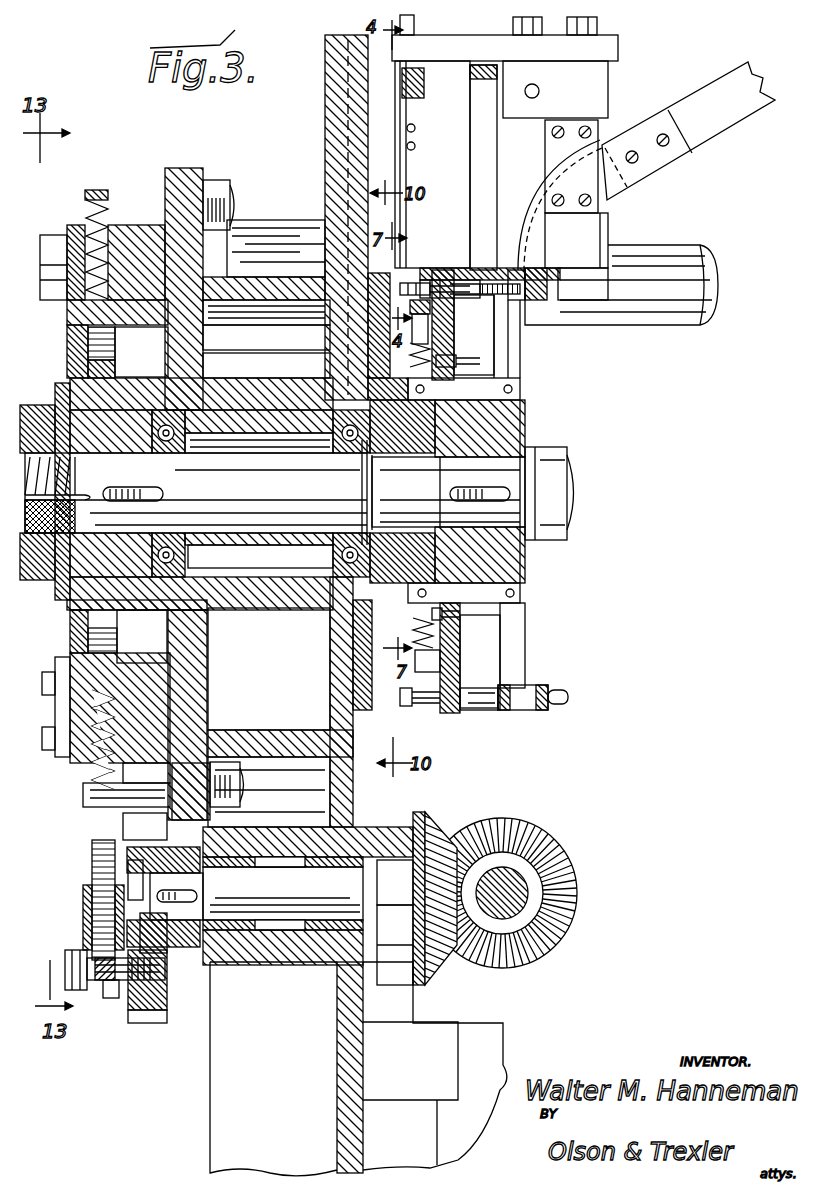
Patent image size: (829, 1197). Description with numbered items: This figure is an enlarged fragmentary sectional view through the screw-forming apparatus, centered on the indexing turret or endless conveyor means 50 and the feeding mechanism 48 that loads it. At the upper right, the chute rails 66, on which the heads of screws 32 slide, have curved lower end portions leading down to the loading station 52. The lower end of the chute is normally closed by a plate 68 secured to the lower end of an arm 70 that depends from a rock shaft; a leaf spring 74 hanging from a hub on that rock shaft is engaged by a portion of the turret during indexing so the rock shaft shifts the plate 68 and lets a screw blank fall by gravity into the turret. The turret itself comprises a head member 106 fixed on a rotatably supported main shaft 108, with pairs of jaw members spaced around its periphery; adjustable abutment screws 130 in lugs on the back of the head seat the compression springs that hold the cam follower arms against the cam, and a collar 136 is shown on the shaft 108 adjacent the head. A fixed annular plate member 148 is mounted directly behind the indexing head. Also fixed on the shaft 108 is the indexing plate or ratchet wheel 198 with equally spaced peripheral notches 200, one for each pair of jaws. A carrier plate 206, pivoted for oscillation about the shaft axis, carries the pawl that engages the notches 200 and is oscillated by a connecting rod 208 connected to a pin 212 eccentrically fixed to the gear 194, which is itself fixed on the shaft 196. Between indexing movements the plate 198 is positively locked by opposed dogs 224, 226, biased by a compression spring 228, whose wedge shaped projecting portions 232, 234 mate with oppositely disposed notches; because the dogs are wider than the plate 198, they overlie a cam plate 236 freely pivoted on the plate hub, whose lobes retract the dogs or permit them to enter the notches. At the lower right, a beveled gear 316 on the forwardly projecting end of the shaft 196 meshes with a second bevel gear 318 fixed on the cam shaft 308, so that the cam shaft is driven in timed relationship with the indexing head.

The screw 32 is at (555, 270).
The screw supply and feeding mechanism 48 is at (608, 88).
The turret or endless conveyor means 50 is at (528, 426).
The screw feeding or loading station 52 is at (588, 293).
The rails 66 is at (730, 78).
The plate 68 is at (515, 268).
The arm 70 is at (490, 213).
The leaf spring 74 is at (420, 162).
The head member 106 is at (490, 452).
The shaft 108 is at (280, 492).
The adjustable abutment screws 130 is at (397, 318).
The collar 136 is at (412, 447).
The fixed annular plate member 148 is at (350, 342).
The gear 194 is at (148, 1017).
The shaft 196 is at (273, 970).
The indexing plate or ratchet wheel 198 is at (88, 603).
The peripheral notches 200 is at (117, 350).
The carrier plate 206 is at (130, 402).
The connecting rod 208 is at (92, 858).
The pin 212 is at (107, 978).
The dog or plunger 224 is at (67, 240).
The dog or plunger 226 is at (82, 713).
The compression spring 228 is at (108, 203).
The wedge shaped projecting portion 232 is at (93, 330).
The wedge shaped projecting portion 234 is at (83, 668).
The cam plate 236 is at (73, 366).
The cam shaft 308 is at (595, 897).
The beveled gear 316 is at (435, 830).
The second bevel gear 318 is at (527, 830).